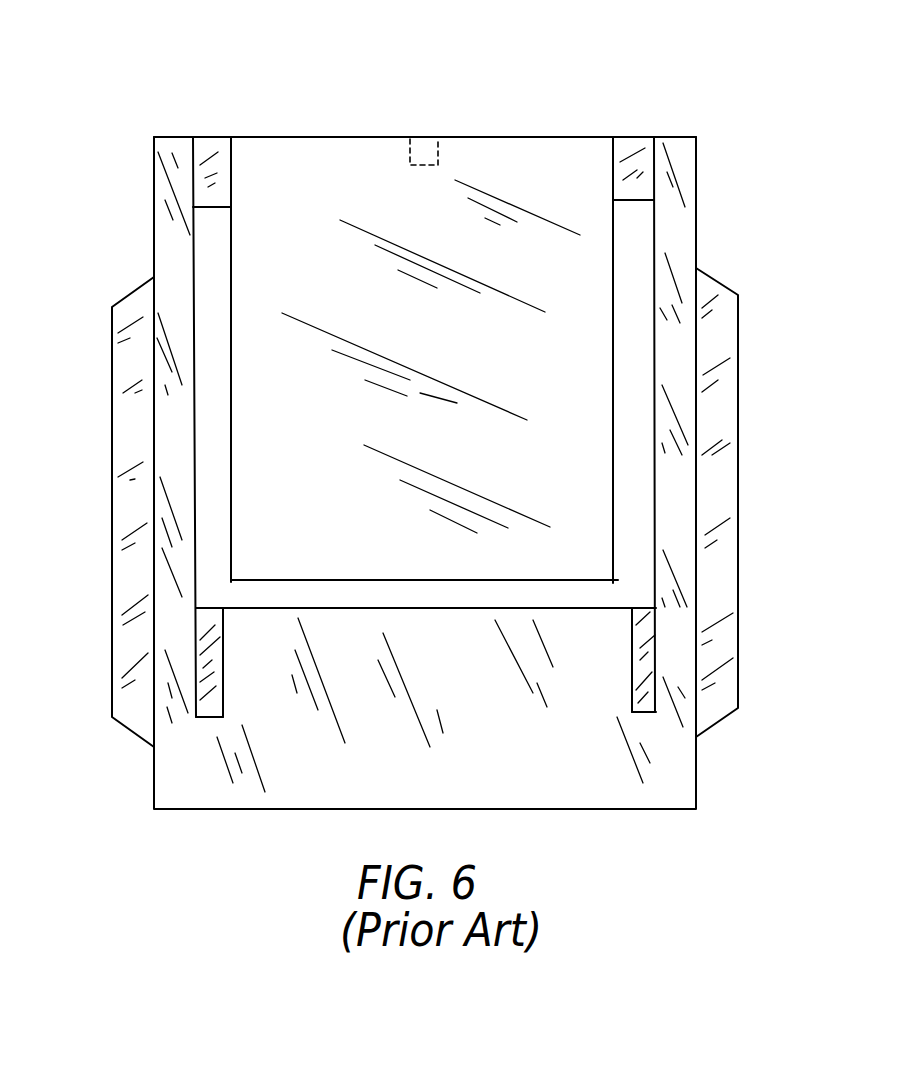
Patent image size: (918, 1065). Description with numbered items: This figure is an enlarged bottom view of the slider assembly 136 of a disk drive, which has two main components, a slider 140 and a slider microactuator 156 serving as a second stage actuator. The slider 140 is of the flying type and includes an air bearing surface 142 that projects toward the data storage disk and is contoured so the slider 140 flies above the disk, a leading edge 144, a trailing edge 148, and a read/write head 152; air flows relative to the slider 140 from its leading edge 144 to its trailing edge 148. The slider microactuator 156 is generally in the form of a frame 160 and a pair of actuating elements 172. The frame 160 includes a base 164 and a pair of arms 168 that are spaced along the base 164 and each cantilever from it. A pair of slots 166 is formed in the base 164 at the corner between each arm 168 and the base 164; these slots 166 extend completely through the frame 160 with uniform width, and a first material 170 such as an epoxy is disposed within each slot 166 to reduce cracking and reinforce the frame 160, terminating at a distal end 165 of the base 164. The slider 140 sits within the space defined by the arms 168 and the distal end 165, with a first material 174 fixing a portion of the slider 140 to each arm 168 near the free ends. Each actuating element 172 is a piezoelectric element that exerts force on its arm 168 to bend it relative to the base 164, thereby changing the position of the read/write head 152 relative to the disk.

The slider assembly 136 is at (588, 86).
The slider 140 is at (613, 373).
The air bearing surface 142 is at (325, 280).
The leading edge 144 is at (272, 580).
The trailing edge 148 is at (297, 137).
The read/write head 152 is at (420, 148).
The slider microactuator 156 is at (160, 847).
The frame 160 is at (697, 808).
The base 164 is at (540, 783).
The distal end 165 is at (426, 605).
The slots 166 is at (222, 662).
The arms 168 is at (152, 228).
The first material 170 is at (213, 705).
The actuating elements 172 is at (112, 632).
The first material 174 is at (207, 158).